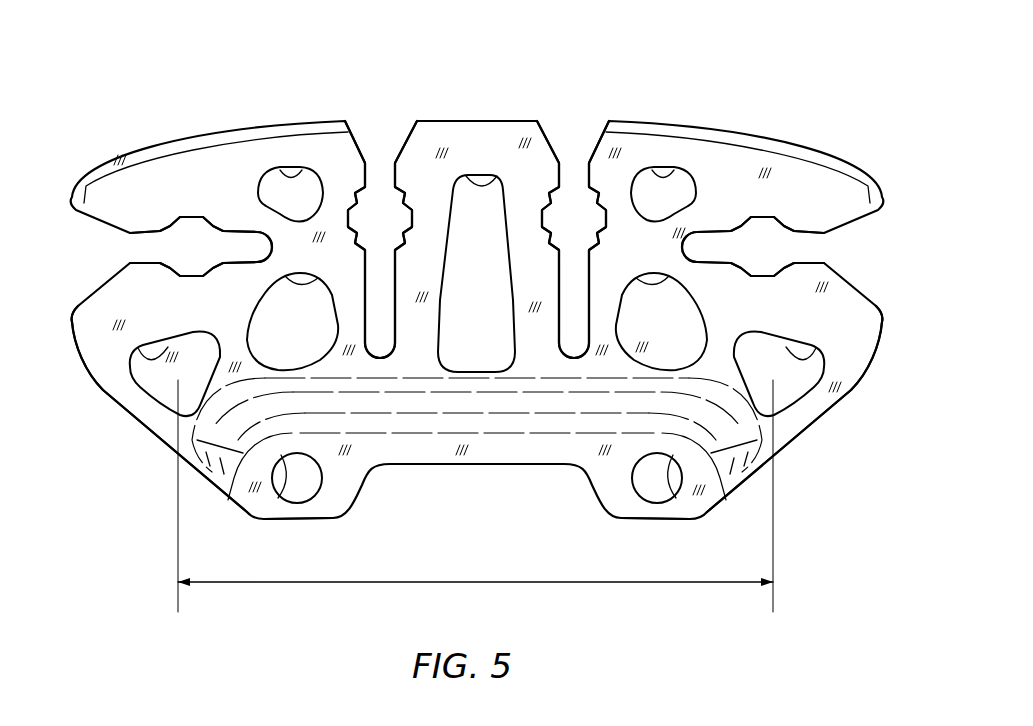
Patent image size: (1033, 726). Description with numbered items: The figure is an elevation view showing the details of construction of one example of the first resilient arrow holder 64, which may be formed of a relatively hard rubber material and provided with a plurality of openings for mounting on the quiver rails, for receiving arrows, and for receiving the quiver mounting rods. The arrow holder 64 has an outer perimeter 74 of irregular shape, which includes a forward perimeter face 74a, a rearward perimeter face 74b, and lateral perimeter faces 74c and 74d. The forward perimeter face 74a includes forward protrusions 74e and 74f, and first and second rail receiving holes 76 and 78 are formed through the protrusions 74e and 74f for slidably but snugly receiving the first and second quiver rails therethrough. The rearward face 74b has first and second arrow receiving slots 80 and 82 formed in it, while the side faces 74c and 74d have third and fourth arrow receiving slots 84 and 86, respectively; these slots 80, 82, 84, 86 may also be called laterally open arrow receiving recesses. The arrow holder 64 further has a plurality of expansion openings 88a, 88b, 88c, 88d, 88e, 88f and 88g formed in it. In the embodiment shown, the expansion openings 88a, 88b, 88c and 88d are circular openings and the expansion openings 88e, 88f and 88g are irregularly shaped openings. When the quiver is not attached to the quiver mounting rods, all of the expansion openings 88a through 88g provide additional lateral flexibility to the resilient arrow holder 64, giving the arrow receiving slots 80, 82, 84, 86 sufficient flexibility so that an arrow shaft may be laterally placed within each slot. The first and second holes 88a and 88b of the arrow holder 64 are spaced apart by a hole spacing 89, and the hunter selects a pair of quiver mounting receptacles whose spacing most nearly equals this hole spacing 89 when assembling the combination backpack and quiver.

The first resilient arrow holder 64 is at (780, 90).
The outer perimeter 74 is at (176, 138).
The forward perimeter face 74a is at (433, 467).
The rearward perimeter face 74b is at (445, 121).
The lateral perimeter face 74c is at (72, 314).
The lateral perimeter face 74d is at (882, 318).
The forward protrusion 74e is at (297, 522).
The forward protrusion 74f is at (653, 522).
The first rail receiving hole 76 is at (281, 490).
The second rail receiving hole 78 is at (673, 490).
The first arrow receiving slot 80 is at (379, 150).
The second arrow receiving slot 82 is at (573, 150).
The third arrow receiving slot 84 is at (123, 250).
The fourth arrow receiving slot 86 is at (840, 252).
The expansion opening 88a is at (135, 370).
The expansion opening 88b is at (819, 370).
The expansion opening 88c is at (293, 178).
The expansion opening 88d is at (646, 177).
The expansion opening 88e is at (313, 277).
The expansion opening 88f is at (652, 274).
The expansion opening 88g is at (497, 172).
The hole spacing 89 is at (418, 586).